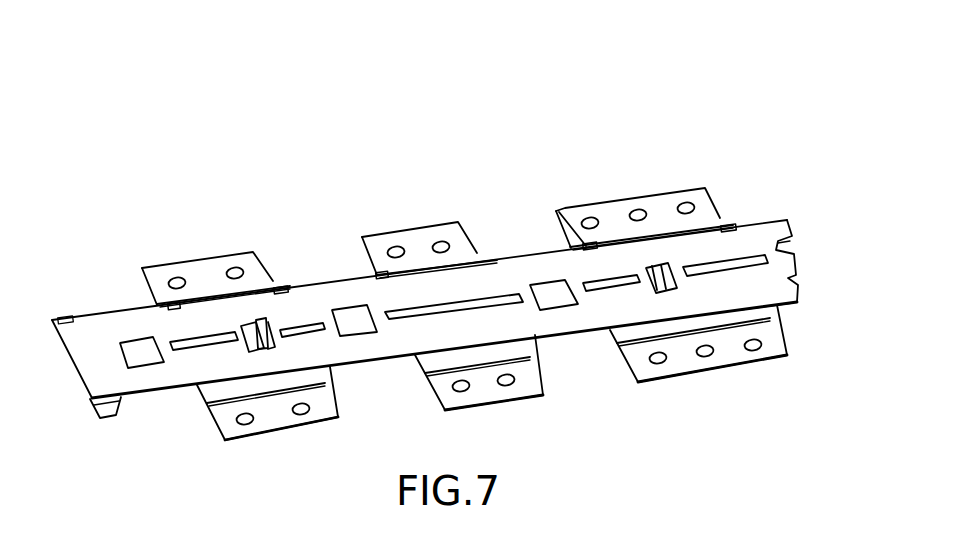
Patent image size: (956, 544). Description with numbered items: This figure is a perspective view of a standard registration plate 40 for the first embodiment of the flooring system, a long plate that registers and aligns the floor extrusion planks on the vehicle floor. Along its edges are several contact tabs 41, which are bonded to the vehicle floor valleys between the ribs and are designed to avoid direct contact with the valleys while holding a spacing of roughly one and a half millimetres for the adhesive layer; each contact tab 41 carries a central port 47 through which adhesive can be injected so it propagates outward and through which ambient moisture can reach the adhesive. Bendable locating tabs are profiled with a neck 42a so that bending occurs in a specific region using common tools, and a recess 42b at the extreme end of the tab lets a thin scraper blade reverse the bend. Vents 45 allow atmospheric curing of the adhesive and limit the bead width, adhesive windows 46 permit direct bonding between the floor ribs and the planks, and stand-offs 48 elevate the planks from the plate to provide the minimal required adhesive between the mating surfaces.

The standard registration plate 40 is at (780, 194).
The contact tab 41 is at (243, 262).
The neck 42a is at (253, 353).
The recess 42b is at (258, 322).
The vent 45 is at (485, 302).
The adhesive window 46 is at (363, 338).
The central port 47 is at (246, 424).
The stand-off 48 is at (583, 245).